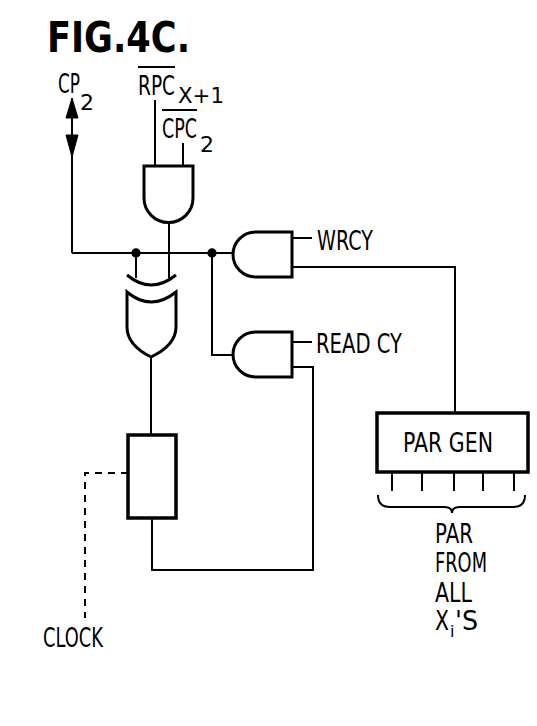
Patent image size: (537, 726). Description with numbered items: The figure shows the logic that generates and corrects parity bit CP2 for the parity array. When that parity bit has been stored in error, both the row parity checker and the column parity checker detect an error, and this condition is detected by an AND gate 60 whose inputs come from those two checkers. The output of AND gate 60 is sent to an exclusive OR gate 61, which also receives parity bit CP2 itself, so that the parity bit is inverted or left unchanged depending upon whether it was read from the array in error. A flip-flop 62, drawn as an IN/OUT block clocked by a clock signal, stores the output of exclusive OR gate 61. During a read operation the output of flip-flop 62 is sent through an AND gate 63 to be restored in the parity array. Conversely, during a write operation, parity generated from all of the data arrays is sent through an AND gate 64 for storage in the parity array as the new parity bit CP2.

The AND gate 60 is at (157, 200).
The exclusive OR gate 61 is at (140, 332).
The flip-flop 62 is at (176, 468).
The AND gate 63 is at (251, 367).
The AND gate 64 is at (251, 265).